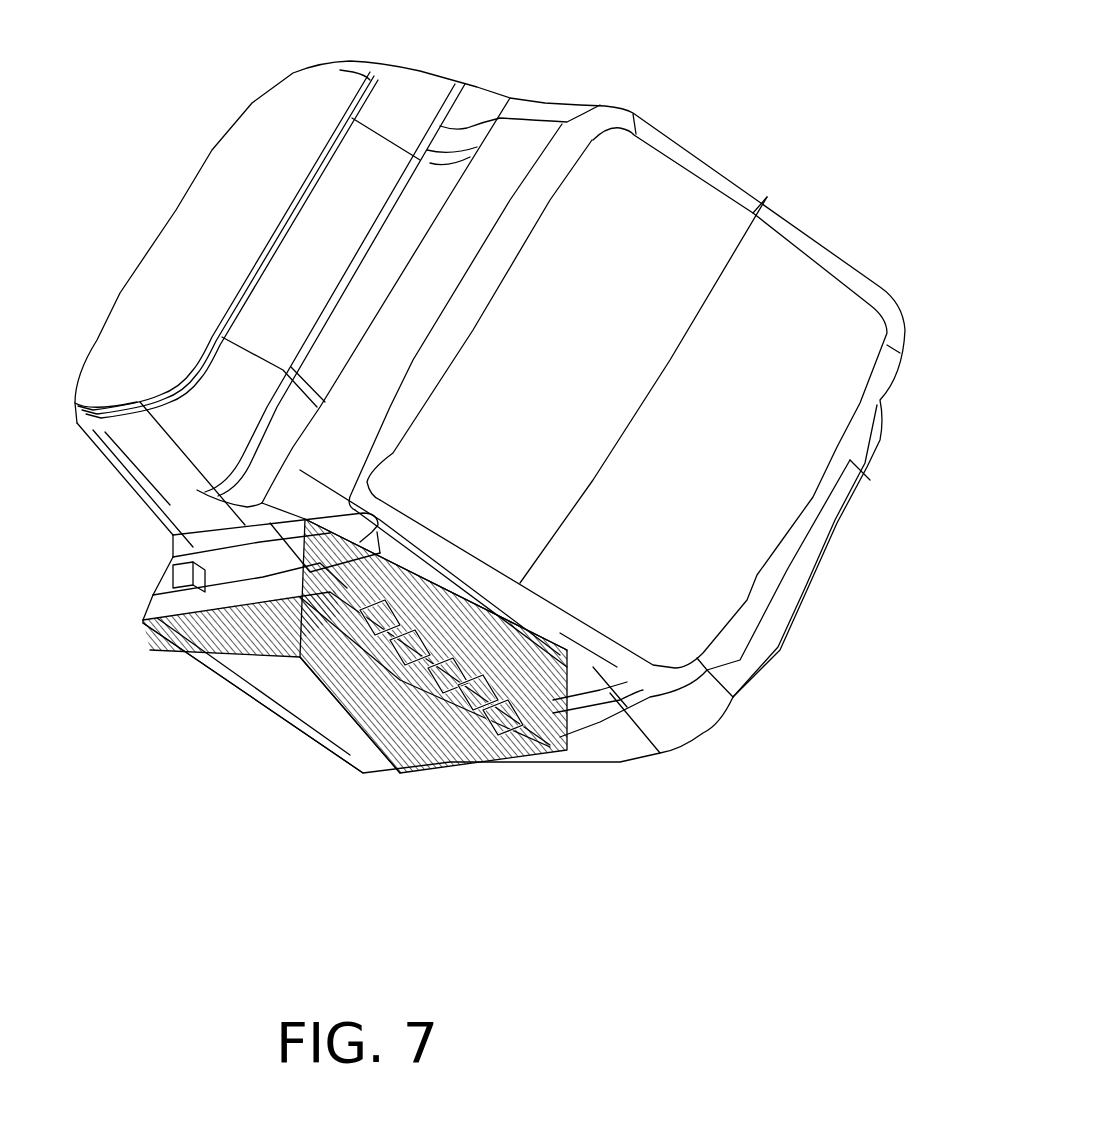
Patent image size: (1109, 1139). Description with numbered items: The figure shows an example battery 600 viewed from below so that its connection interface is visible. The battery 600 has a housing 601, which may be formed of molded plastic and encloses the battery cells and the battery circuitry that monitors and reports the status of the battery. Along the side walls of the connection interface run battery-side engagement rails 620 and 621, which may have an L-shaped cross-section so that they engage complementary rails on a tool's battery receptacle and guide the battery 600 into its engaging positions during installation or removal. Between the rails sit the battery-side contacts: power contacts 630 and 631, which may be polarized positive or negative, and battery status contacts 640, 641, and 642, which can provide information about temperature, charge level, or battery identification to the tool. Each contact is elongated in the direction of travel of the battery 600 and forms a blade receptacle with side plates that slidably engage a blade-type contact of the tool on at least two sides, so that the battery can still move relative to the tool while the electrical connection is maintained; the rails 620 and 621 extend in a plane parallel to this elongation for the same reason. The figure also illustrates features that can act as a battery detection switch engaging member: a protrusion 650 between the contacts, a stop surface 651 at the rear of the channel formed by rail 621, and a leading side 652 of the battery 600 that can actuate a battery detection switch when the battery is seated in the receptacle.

The battery 600 is at (753, 83).
The housing 601 is at (807, 293).
The battery-side engagement rail 620 is at (544, 740).
The battery-side engagement rail 621 is at (263, 595).
The power contact 630 is at (377, 627).
The power contact 631 is at (493, 718).
The battery status contact 640 is at (403, 650).
The battery status contact 641 is at (441, 677).
The battery status contact 642 is at (470, 692).
The protrusion 650 is at (557, 804).
The stop surface 651 is at (178, 583).
The leading side 652 is at (539, 425).